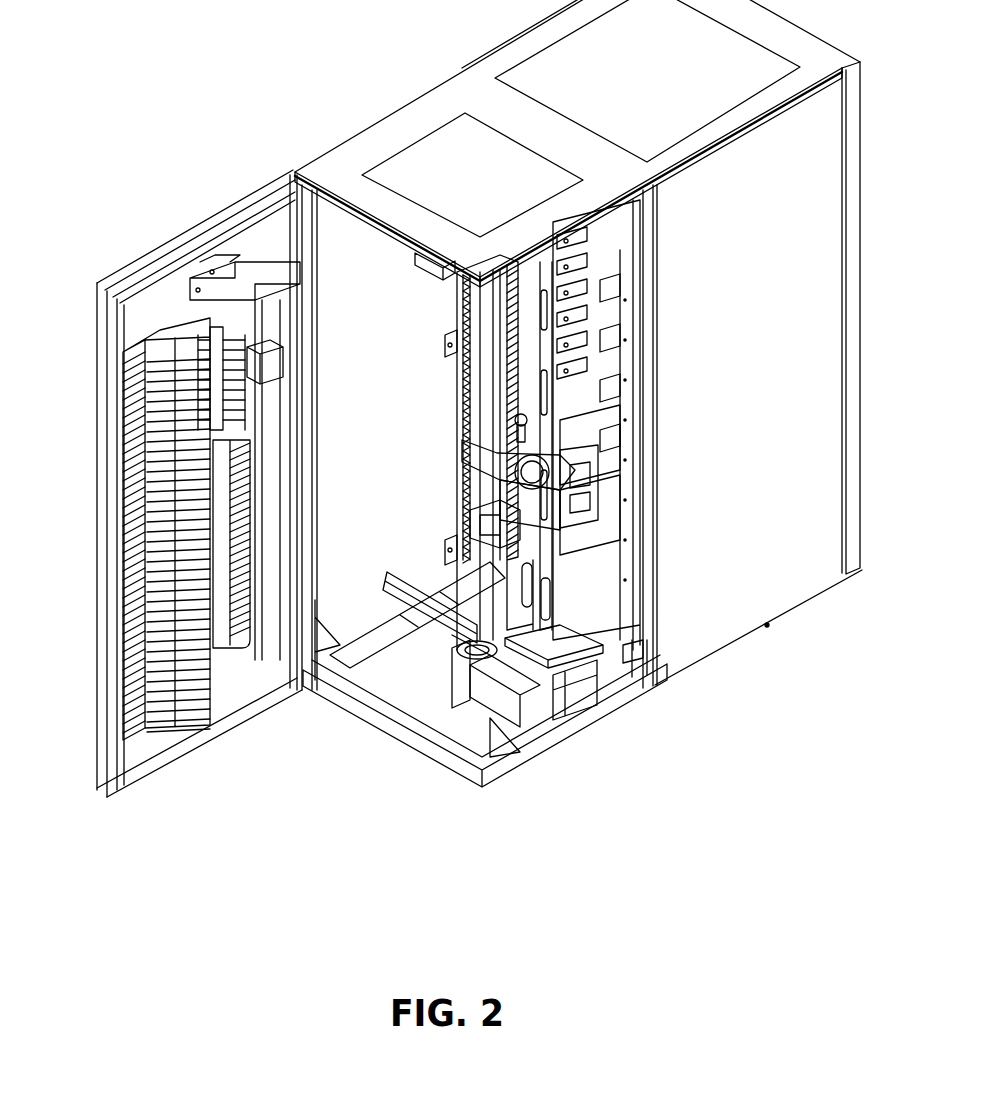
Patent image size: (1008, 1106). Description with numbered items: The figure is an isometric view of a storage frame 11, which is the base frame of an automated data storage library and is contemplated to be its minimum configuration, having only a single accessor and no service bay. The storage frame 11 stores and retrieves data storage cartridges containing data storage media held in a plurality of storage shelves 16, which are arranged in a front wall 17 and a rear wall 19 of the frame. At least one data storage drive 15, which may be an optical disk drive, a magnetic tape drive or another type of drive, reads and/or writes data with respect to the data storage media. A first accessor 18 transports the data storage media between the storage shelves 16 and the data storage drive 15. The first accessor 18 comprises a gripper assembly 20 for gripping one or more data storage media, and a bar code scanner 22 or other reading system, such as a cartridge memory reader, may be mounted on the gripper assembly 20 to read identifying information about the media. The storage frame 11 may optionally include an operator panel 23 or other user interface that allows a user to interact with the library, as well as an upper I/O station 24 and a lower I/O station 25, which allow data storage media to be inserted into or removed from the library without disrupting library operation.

The storage frame 11 is at (367, 792).
The data storage drive 15 is at (610, 272).
The storage shelves 16 is at (125, 604).
The front wall 17 is at (105, 455).
The first accessor 18 is at (522, 692).
The rear wall 19 is at (455, 314).
The gripper assembly 20 is at (605, 486).
The bar code scanner 22 is at (490, 520).
The operator panel 23 is at (272, 290).
The upper I/O station 24 is at (255, 326).
The lower I/O station 25 is at (252, 514).